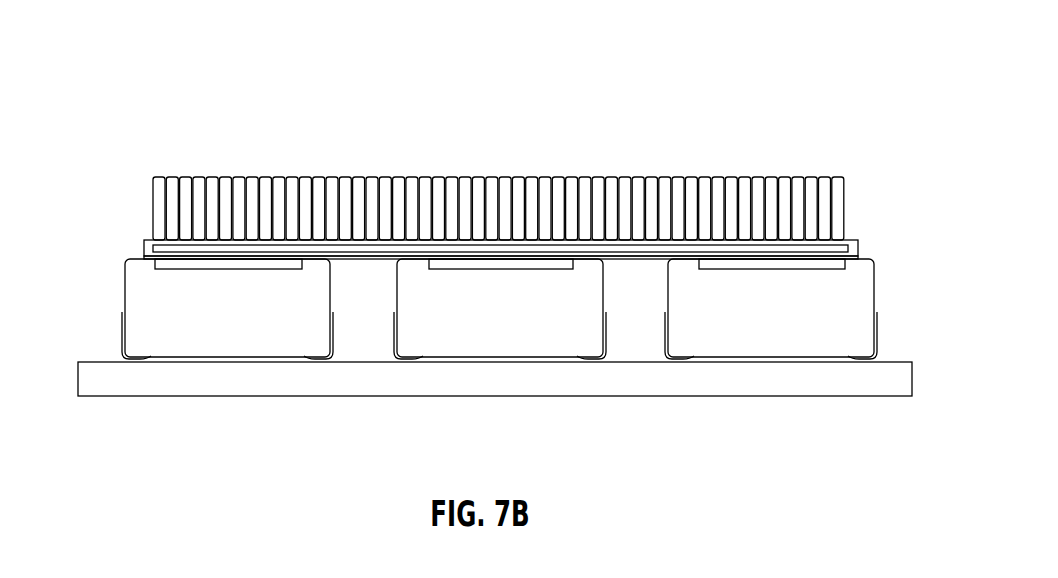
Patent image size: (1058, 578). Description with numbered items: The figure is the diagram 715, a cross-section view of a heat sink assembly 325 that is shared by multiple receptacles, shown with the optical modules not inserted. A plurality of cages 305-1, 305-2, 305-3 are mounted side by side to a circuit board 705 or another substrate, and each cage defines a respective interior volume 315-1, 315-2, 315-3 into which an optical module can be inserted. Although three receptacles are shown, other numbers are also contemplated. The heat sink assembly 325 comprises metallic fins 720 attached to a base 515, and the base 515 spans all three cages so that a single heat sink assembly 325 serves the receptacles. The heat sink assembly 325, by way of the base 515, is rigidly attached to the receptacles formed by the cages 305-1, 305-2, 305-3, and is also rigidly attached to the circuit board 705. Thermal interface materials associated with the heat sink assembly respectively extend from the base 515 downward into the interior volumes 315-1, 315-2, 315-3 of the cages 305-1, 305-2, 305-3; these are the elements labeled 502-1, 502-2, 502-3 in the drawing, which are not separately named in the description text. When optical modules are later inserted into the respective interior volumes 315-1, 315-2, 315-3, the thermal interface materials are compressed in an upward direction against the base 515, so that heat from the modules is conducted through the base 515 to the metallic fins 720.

The diagram 715 is at (803, 90).
The metallic fins 720 is at (540, 177).
The heat sink assembly 325 is at (850, 235).
The base 515 is at (435, 256).
The circuit board 705 is at (97, 388).
The interior volume 315-1 is at (150, 320).
The interior volume 315-2 is at (438, 343).
The interior volume 315-3 is at (702, 343).
The first die 502-1 is at (215, 262).
The second die 502-2 is at (523, 262).
The third die 502-3 is at (787, 262).
The cage 305-1 is at (228, 358).
The cage 305-2 is at (543, 358).
The cage 305-3 is at (808, 357).